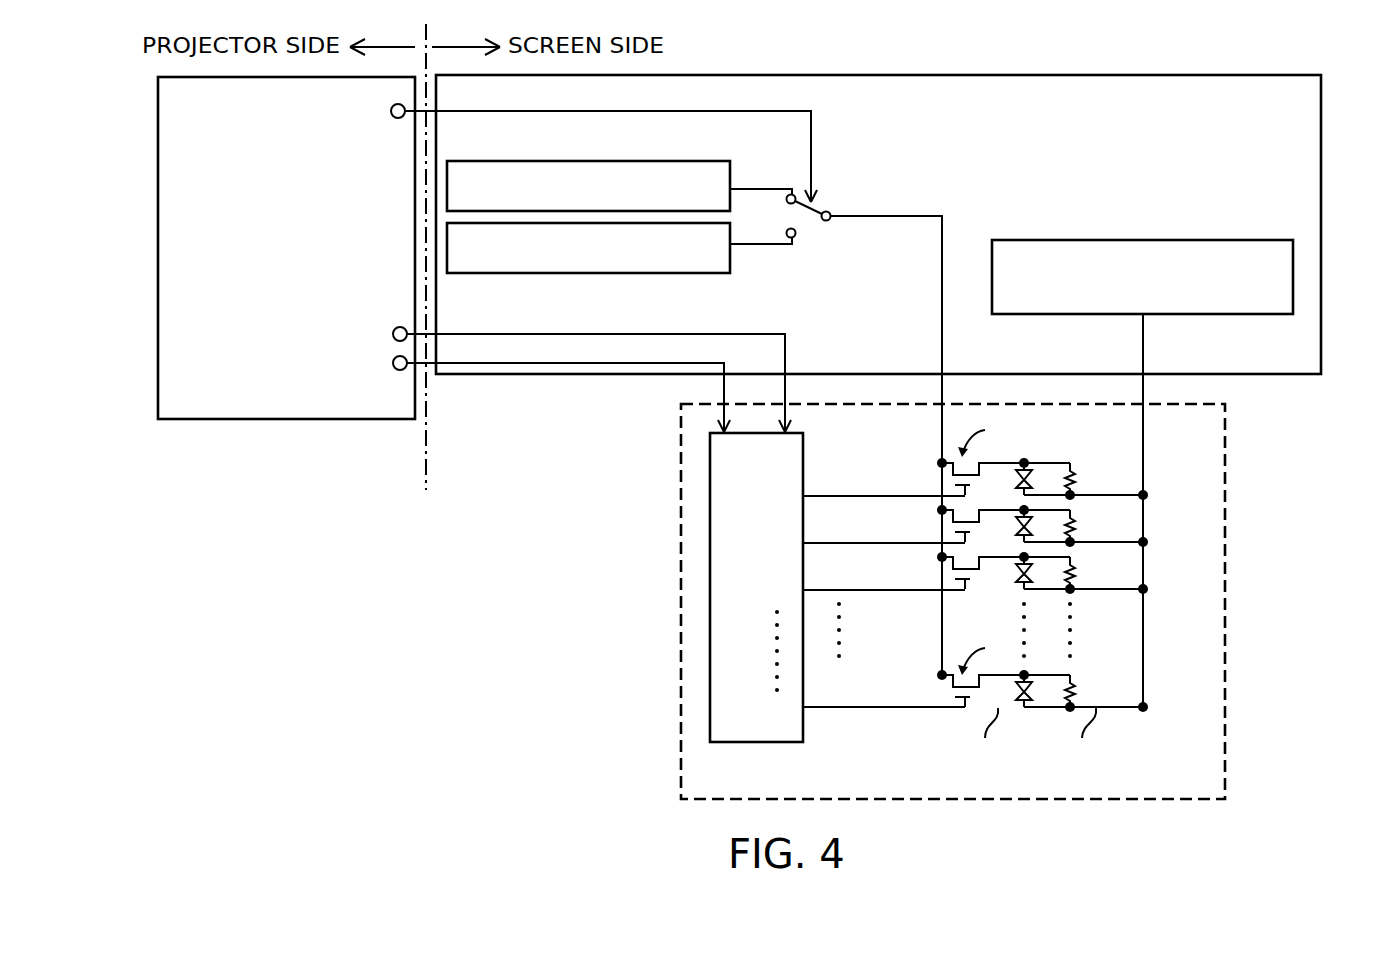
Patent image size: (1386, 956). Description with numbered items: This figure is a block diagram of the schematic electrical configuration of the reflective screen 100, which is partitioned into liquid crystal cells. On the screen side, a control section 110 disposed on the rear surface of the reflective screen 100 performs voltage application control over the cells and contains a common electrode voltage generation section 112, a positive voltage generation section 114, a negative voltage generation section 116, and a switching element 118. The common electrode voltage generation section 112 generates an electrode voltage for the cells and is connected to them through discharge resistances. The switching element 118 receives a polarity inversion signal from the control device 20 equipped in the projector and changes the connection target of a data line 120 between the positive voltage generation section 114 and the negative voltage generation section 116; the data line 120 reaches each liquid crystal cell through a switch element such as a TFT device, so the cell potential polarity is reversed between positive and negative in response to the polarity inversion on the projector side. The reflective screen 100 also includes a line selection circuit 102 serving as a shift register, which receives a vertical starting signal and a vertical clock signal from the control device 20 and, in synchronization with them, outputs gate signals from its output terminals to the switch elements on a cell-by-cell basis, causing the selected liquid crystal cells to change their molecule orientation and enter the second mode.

The control device 20 is at (260, 420).
The reflective screen 100 is at (1225, 646).
The line selection circuit 102 is at (775, 742).
The control section 110 is at (1321, 330).
The common electrode voltage generation section 112 is at (1222, 240).
The positive voltage generation section 114 is at (552, 161).
The negative voltage generation section 116 is at (553, 273).
The switching element 118 is at (855, 181).
The data line 120 is at (942, 232).